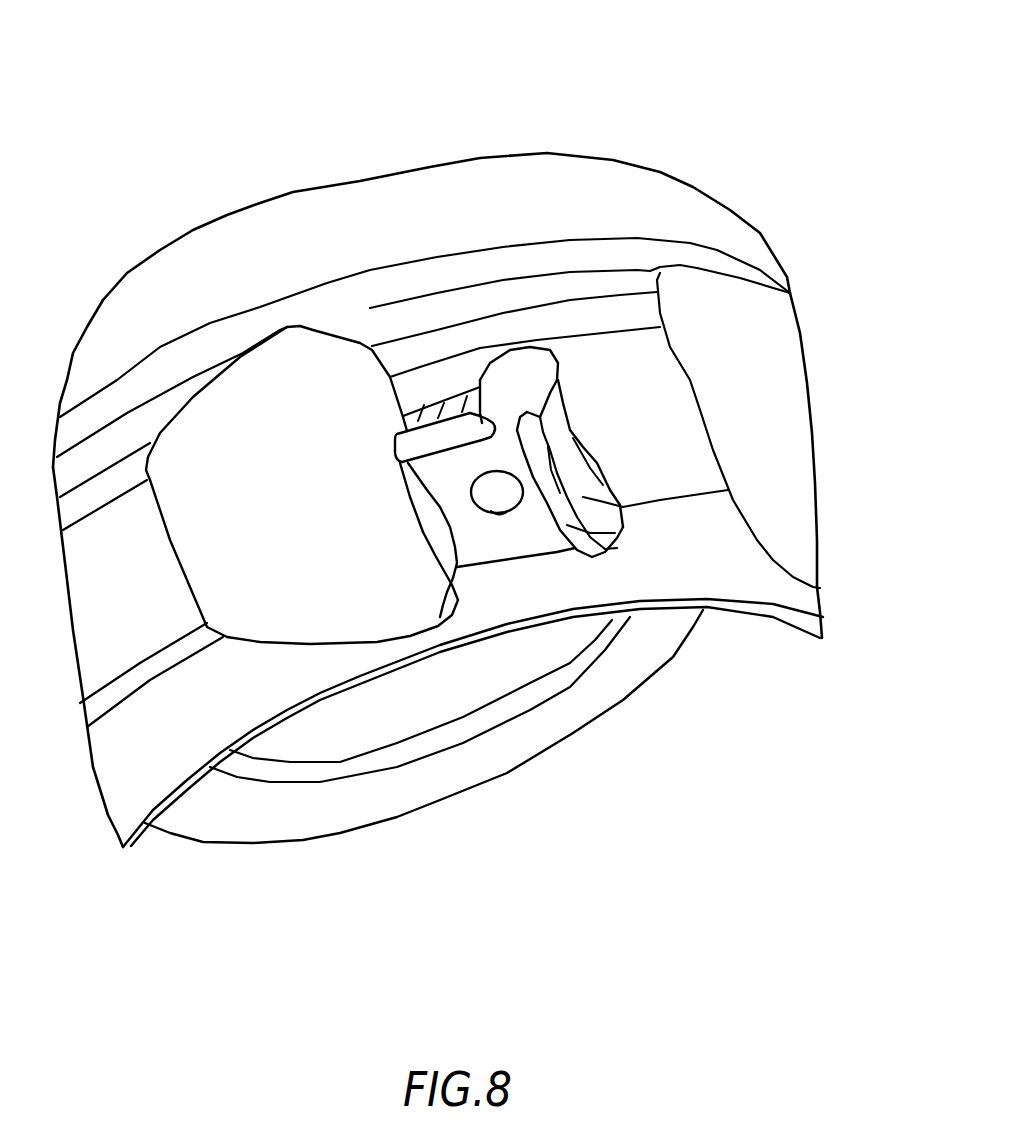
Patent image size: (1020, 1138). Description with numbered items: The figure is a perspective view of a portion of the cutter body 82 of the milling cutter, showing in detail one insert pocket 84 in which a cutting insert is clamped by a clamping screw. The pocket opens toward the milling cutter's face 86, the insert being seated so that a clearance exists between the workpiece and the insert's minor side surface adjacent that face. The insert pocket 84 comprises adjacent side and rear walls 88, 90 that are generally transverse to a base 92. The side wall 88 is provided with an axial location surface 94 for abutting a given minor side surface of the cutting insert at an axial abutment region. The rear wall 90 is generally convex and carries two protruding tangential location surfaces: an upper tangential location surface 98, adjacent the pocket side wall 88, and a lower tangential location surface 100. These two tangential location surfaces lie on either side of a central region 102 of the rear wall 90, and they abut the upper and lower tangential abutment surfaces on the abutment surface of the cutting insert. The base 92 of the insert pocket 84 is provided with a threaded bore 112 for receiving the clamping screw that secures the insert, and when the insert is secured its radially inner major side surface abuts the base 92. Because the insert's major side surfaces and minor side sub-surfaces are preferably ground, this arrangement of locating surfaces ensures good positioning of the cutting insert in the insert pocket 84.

The cutter body 82 is at (437, 432).
The insert pocket 84 is at (305, 609).
The face 86 is at (486, 702).
The side wall 88 is at (450, 259).
The rear wall 90 is at (583, 631).
The base 92 is at (485, 621).
The axial location surface 94 is at (392, 270).
The upper tangential location surface 98 is at (677, 426).
The lower tangential location surface 100 is at (742, 451).
The central region 102 is at (726, 428).
The threaded bore 112 is at (608, 666).